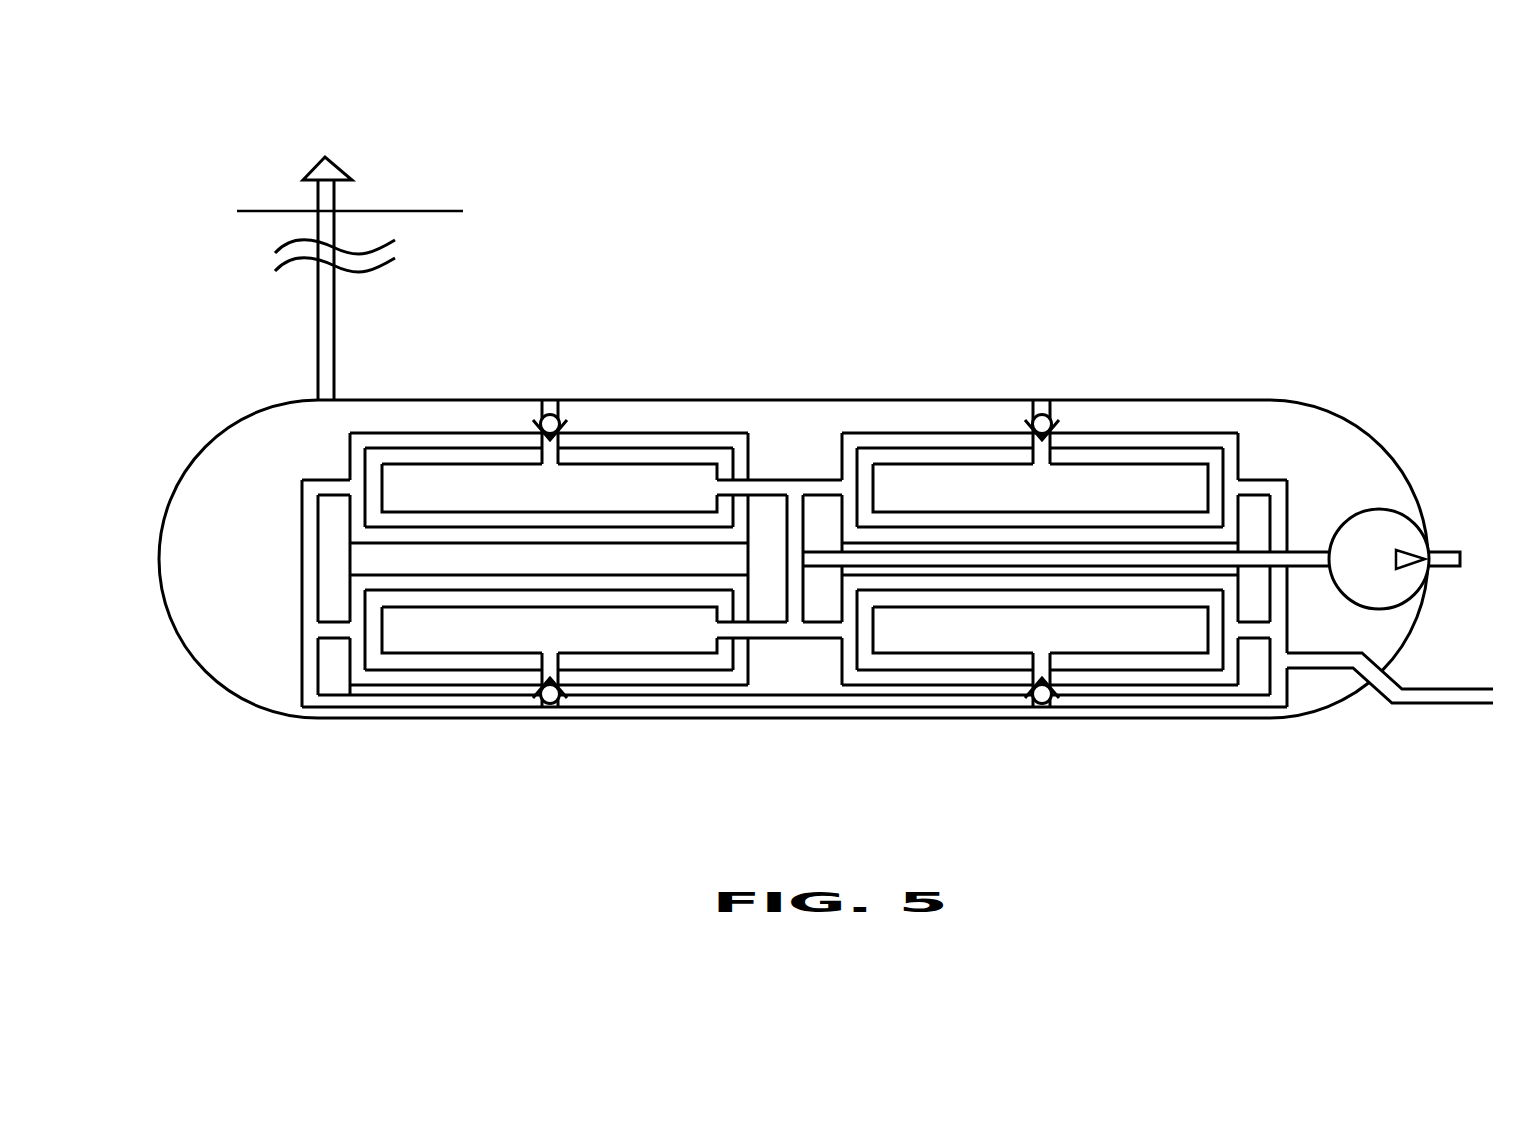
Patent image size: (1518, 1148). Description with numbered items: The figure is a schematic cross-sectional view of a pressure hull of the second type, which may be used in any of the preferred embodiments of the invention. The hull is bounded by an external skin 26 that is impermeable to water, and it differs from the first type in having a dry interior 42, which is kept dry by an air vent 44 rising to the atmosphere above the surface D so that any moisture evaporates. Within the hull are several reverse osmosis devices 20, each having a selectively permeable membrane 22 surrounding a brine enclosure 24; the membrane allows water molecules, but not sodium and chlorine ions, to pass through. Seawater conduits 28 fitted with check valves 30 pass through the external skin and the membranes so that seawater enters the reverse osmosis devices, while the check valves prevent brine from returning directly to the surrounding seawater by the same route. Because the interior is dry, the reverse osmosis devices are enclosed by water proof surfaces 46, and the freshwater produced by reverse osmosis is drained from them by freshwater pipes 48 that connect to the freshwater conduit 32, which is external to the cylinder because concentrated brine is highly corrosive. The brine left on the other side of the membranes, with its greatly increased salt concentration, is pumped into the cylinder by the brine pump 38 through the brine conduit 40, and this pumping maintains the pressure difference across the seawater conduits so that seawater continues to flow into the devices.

The reverse osmosis device 20 is at (365, 612).
The selectively permeable membrane 22 is at (668, 466).
The brine enclosure 24 is at (488, 622).
The external skin 26 is at (316, 548).
The seawater conduit 28 is at (556, 402).
The check valve 30 is at (1058, 419).
The freshwater conduit 32 is at (1418, 707).
The brine pump 38 is at (1365, 509).
The brine conduit 40 is at (787, 557).
The dry interior 42 is at (260, 662).
The air vent 44 is at (305, 180).
The water proof surface 46 is at (841, 432).
The freshwater pipe 48 is at (302, 620).
The sea level D is at (417, 210).